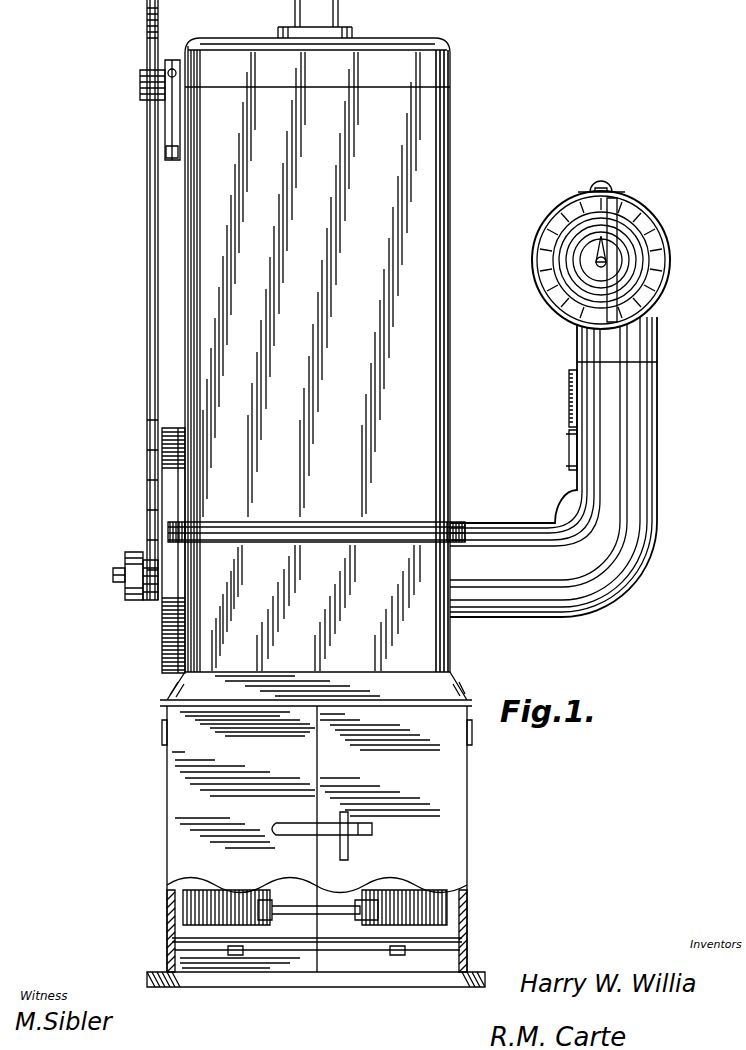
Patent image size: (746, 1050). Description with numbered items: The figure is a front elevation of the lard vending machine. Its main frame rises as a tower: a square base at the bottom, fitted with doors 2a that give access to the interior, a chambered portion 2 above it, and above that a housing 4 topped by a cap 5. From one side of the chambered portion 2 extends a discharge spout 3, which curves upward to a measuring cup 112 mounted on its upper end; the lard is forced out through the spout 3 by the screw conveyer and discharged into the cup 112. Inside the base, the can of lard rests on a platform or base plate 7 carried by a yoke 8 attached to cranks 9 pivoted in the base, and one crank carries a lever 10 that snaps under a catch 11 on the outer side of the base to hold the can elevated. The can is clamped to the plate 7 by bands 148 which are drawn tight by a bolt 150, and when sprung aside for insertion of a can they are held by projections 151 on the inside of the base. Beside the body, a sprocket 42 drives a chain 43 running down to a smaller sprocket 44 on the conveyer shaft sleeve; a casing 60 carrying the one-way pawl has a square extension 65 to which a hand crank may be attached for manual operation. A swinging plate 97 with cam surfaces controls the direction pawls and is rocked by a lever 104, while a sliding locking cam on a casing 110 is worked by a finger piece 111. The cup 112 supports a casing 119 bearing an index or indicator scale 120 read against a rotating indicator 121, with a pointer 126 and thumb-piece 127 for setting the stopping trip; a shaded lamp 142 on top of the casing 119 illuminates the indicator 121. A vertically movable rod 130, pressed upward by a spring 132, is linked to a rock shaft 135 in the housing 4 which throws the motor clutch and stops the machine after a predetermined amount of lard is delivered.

The chambered portion 2 is at (317, 607).
The doors 2a is at (336, 842).
The discharge spout 3 is at (553, 467).
The housing 4 is at (245, 112).
The cap 5 is at (229, 50).
The platform or base plate 7 is at (280, 942).
The yoke 8 is at (372, 948).
The cranks 9 is at (182, 962).
The lever 10 is at (474, 975).
The catch 11 is at (470, 960).
The sprocket 42 is at (148, 36).
The chain 43 is at (147, 338).
The smaller sprocket 44 is at (152, 600).
The casing 60 is at (126, 552).
The square extension 65 is at (113, 575).
The plate 97 is at (172, 128).
The lever 104 is at (170, 152).
The casing 110 is at (166, 112).
The finger piece 111 is at (168, 68).
The measuring cup 112 is at (625, 342).
The casing 119 is at (690, 204).
The index or indicator scale 120 is at (620, 252).
The rotating indicator 121 is at (565, 283).
The pointer 126 is at (575, 250).
The thumb-piece 127 is at (592, 264).
The vertically movable rod 130 is at (570, 448).
The spring 132 is at (570, 390).
The rock shaft 135 is at (486, 522).
The illuminator or shaded lamp 142 is at (606, 184).
The bands 148 is at (447, 912).
The bolt 150 is at (306, 916).
The projections 151 is at (460, 890).